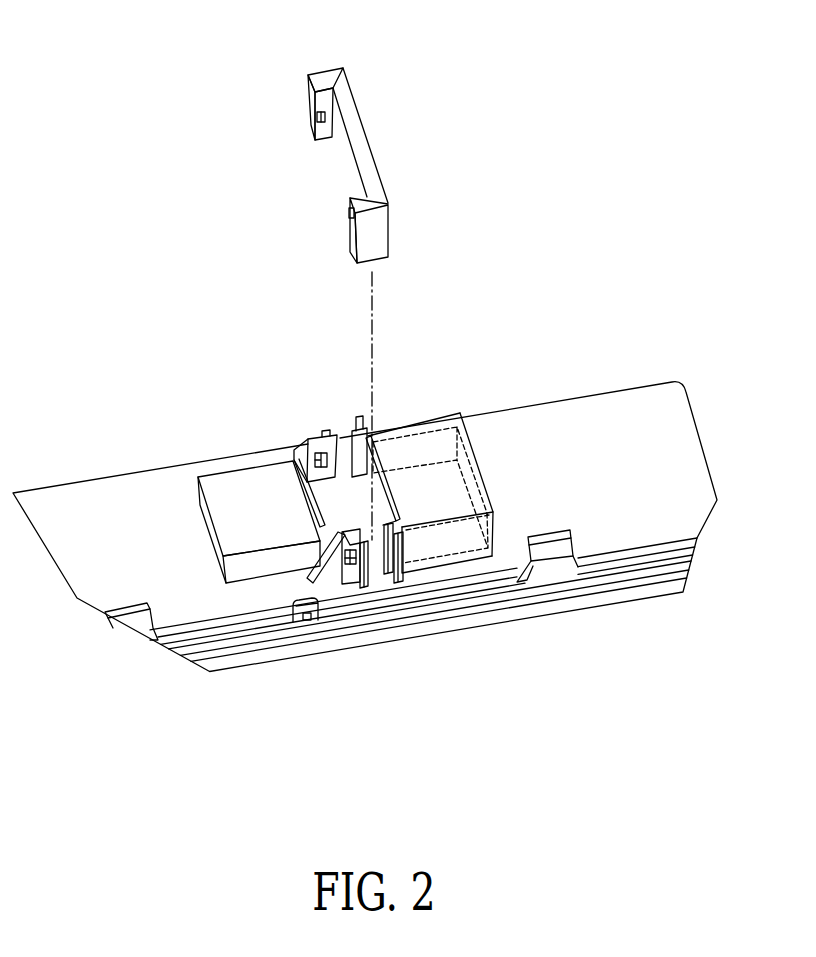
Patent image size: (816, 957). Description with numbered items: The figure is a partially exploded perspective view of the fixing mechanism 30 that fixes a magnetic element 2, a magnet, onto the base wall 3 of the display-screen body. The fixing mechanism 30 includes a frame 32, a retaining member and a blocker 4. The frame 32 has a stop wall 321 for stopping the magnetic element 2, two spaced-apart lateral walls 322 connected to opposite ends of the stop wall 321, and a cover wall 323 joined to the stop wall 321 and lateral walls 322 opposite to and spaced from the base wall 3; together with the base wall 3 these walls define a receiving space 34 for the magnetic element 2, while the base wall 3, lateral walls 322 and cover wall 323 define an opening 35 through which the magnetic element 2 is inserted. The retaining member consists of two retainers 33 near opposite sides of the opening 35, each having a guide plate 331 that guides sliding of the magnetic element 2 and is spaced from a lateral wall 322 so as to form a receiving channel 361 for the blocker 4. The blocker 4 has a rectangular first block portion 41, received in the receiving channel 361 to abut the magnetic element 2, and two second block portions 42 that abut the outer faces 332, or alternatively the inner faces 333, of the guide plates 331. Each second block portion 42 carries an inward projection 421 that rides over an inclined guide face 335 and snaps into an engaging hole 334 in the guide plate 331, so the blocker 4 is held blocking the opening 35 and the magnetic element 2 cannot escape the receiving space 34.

The magnetic element 2 is at (222, 485).
The base wall 3 is at (104, 468).
The fixing mechanism 30 is at (499, 139).
The frame 32 is at (496, 500).
The stop wall 321 is at (482, 472).
The lateral walls 322 is at (432, 412).
The cover wall 323 is at (447, 495).
The retainers 33 is at (289, 534).
The guide plate 331 is at (310, 574).
The outer face 332 is at (310, 437).
The inner face 333 is at (295, 448).
The engaging hole 334 is at (351, 578).
The inclined guide face 335 is at (347, 572).
The receiving space 34 is at (423, 497).
The opening 35 is at (383, 503).
The receiving channel 361 is at (362, 596).
The blocker 4 is at (337, 140).
The first block portion 41 is at (358, 135).
The second block portions 42 is at (322, 82).
The projection 421 is at (317, 115).